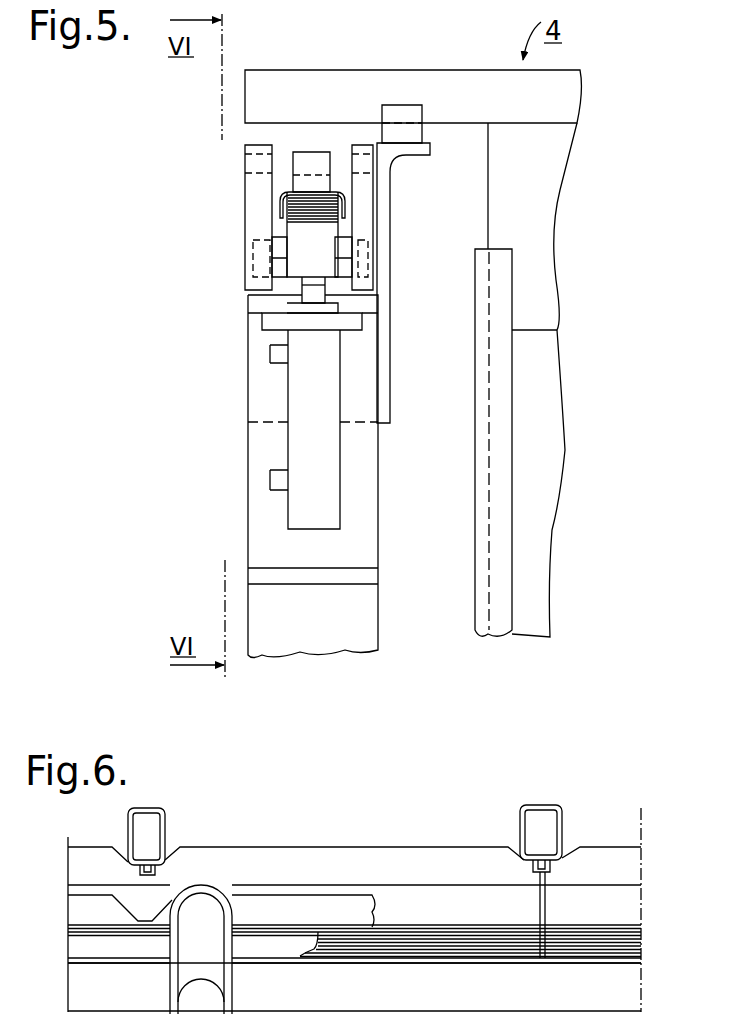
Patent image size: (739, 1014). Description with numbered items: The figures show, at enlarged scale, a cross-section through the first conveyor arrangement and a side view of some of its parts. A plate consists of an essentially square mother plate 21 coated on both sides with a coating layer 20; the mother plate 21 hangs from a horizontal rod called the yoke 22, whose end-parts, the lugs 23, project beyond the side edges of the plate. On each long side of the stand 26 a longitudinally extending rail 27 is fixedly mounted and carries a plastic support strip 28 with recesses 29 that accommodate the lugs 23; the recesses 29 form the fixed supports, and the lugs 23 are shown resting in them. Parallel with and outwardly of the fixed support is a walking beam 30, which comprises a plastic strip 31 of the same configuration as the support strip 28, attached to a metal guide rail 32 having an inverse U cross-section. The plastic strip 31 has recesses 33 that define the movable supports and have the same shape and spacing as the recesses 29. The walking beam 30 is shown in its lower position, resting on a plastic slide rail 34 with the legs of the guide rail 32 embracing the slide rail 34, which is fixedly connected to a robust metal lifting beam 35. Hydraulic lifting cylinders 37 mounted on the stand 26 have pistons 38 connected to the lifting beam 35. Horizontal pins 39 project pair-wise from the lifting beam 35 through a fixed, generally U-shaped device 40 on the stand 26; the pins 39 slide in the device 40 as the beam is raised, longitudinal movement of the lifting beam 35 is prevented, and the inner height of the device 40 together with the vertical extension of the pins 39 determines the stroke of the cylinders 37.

In FIG. 5, the coating layer 20 is at (548, 397).
In FIG. 5, the mother plate 21 is at (549, 200).
In FIG. 5, the yoke 22 is at (578, 97).
In FIG. 6, the yoke 22 is at (165, 815).
In FIG. 6, the lugs 23 is at (541, 881).
In FIG. 5, the stand 26 is at (313, 627).
In FIG. 5, the rail 27 is at (386, 218).
In FIG. 5, the support strip 28 is at (403, 113).
In FIG. 6, the support strip 28 is at (357, 853).
In FIG. 6, the recesses 29 is at (170, 850).
In FIG. 5, the walking beam 30 is at (283, 183).
In FIG. 6, the walking beam 30 is at (60, 917).
In FIG. 5, the plastic strip 31 is at (306, 152).
In FIG. 6, the plastic strip 31 is at (371, 908).
In FIG. 5, the guide rail 32 is at (271, 203).
In FIG. 6, the guide rail 32 is at (75, 952).
In FIG. 6, the recesses 33 is at (128, 905).
In FIG. 5, the slide rail 34 is at (346, 200).
In FIG. 6, the slide rail 34 is at (643, 944).
In FIG. 5, the lifting beam 35 is at (329, 230).
In FIG. 6, the lifting beam 35 is at (643, 978).
In FIG. 5, the lifting cylinders 37 is at (330, 494).
In FIG. 5, the pistons 38 is at (321, 286).
In FIG. 6, the pistons 38 is at (345, 1010).
In FIG. 5, the pins 39 is at (243, 277).
In FIG. 6, the pins 39 is at (217, 1002).
In FIG. 5, the U-shaped device 40 is at (258, 225).
In FIG. 6, the U-shaped device 40 is at (173, 983).